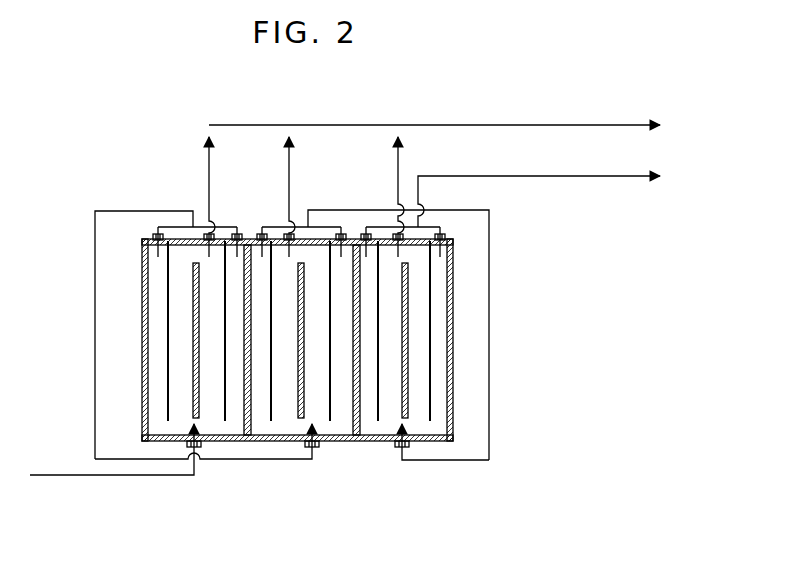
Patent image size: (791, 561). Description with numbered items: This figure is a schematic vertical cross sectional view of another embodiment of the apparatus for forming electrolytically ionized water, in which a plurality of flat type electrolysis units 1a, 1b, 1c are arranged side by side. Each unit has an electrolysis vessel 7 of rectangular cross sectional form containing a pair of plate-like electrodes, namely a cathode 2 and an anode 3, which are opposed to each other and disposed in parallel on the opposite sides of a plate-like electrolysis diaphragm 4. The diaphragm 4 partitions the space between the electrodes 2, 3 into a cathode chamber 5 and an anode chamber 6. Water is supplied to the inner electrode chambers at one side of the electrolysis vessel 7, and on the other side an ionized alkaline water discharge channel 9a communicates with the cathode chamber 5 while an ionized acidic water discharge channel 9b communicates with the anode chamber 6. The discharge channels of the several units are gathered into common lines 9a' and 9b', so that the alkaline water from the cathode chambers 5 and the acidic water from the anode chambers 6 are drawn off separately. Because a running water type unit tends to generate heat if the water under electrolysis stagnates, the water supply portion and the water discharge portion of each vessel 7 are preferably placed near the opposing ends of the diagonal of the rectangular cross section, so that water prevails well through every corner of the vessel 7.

The electrolysis unit 1a is at (142, 487).
The electrolysis unit 1b is at (250, 487).
The electrolysis unit 1c is at (450, 487).
The cathode 2 is at (142, 328).
The anode 3 is at (194, 336).
The electrolysis diaphragm 4 is at (168, 378).
The cathode chamber 5 is at (151, 307).
The anode chamber 6 is at (176, 307).
The electrolysis vessel 7 is at (180, 423).
The ionized alkaline water discharge channel 9a is at (321, 312).
The ionized acidic water discharge channel 9b is at (327, 185).
The anolyte discharge line 9a' is at (539, 213).
The catholyte discharge line 9b' is at (434, 101).